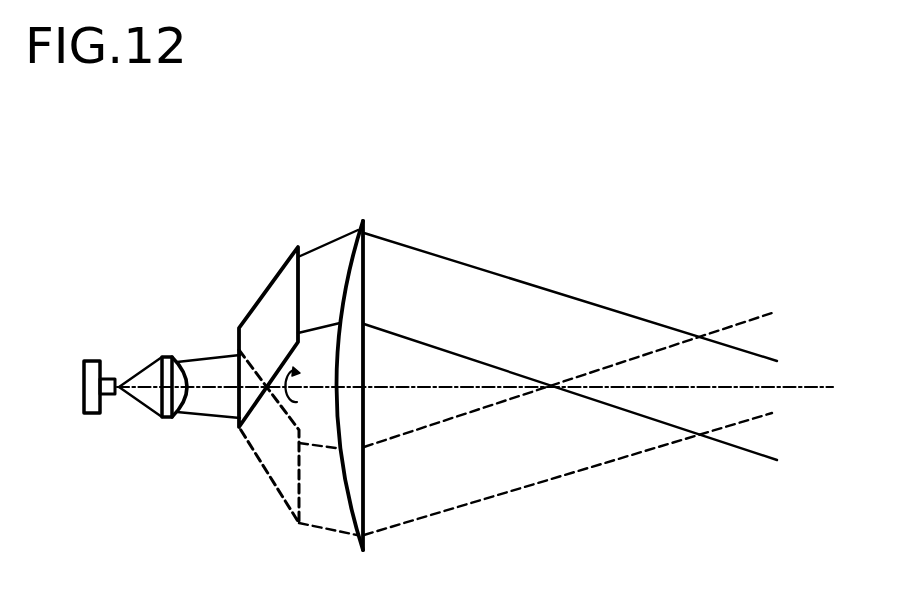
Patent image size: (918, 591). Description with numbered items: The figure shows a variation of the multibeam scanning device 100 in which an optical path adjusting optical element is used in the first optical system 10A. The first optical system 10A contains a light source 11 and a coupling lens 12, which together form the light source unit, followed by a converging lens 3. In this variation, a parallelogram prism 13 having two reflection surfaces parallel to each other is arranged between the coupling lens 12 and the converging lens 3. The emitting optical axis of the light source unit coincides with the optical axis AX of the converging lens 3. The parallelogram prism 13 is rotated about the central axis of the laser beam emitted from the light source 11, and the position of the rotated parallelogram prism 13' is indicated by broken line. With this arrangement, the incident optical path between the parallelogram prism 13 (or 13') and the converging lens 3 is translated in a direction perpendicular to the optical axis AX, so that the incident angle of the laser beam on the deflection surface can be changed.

The converging lens 3 is at (357, 231).
The first optical system 10A is at (200, 311).
The light source 11 is at (92, 406).
The coupling lens 12 is at (180, 397).
The parallelogram prism 13 is at (269, 319).
The parallelogram prism after rotation 13' is at (298, 458).
The multibeam scanning device 100 is at (678, 233).
The optical axis AX is at (498, 390).